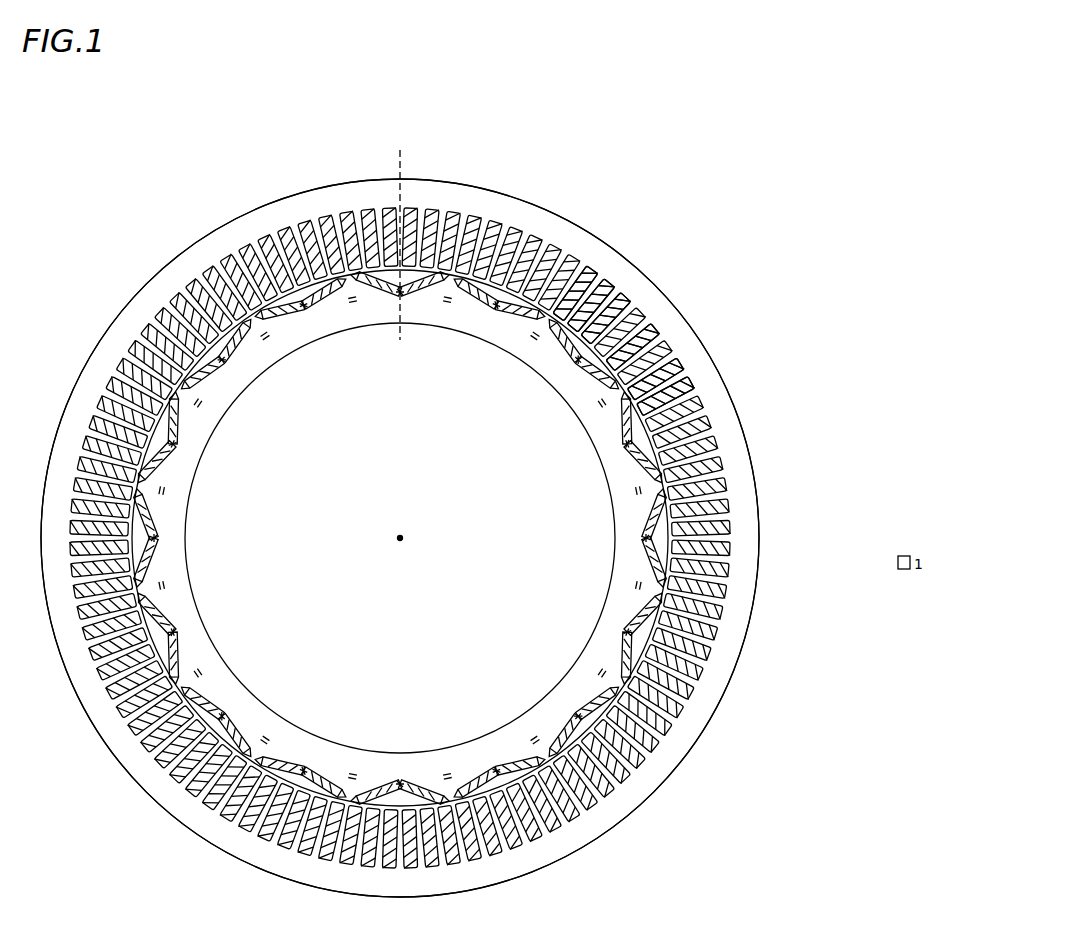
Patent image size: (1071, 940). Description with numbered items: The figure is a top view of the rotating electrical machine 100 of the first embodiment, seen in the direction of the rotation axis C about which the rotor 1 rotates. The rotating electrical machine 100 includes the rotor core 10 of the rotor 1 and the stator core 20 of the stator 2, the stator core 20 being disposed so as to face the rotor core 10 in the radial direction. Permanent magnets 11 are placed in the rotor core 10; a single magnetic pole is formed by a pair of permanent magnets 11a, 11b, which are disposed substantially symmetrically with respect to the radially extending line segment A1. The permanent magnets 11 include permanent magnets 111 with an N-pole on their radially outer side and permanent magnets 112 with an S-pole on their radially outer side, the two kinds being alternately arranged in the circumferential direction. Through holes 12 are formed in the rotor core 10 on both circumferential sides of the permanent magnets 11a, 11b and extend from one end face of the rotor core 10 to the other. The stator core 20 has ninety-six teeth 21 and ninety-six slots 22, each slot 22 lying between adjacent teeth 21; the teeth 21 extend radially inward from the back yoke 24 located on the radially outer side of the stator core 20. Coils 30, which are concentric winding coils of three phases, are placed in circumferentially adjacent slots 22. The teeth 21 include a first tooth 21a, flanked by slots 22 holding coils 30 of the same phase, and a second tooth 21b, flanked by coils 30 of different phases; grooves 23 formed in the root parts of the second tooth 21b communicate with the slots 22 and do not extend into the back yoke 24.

The rotating electrical machine 100 is at (640, 186).
The rotor 1 is at (400, 538).
The rotor core 10 is at (400, 538).
The permanent magnets 11 is at (400, 538).
The permanent magnets 111 is at (400, 538).
The permanent magnets 112 is at (293, 314).
The permanent magnet 11a is at (378, 298).
The permanent magnet 11b is at (418, 298).
The through holes 12 is at (449, 305).
The stator 2 is at (438, 538).
The stator core 20 is at (438, 538).
The teeth 21 is at (410, 537).
The first tooth 21a is at (605, 292).
The second tooth 21b is at (617, 320).
The slots 22 is at (665, 370).
The grooves 23 is at (655, 332).
The back yoke 24 is at (738, 428).
The coils 30 is at (598, 272).
The line segment A1 is at (408, 166).
The rotation axis C is at (403, 537).